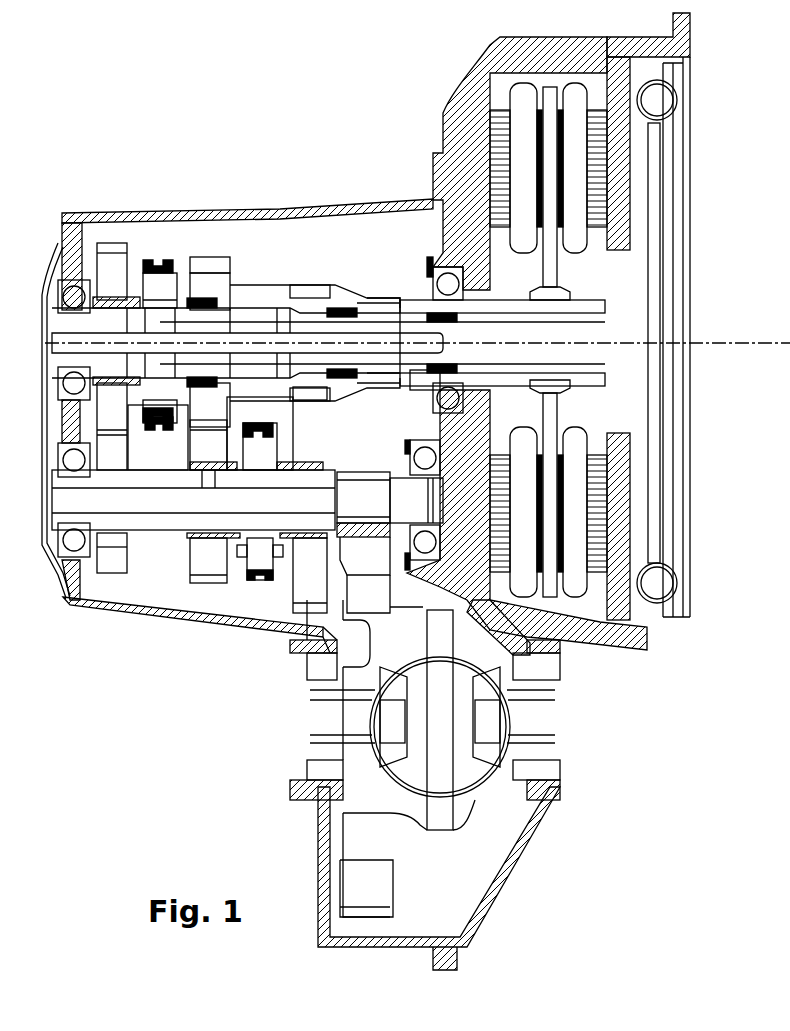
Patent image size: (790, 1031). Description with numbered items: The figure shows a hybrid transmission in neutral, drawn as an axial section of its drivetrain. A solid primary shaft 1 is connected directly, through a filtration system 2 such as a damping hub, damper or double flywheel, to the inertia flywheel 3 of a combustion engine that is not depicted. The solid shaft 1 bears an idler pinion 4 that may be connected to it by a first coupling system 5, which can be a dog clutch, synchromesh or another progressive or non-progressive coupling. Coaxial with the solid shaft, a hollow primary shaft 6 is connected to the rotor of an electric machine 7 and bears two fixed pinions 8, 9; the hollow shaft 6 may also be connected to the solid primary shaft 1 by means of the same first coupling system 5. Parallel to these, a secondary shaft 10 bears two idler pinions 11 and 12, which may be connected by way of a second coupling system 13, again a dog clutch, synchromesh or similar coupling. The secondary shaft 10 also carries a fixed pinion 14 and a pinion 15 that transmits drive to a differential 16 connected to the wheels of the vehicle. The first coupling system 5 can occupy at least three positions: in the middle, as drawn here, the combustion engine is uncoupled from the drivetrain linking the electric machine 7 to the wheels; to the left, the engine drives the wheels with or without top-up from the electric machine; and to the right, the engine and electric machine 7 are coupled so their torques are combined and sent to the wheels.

The solid primary shaft 1 is at (617, 353).
The filtration system 2 is at (655, 196).
The inertia flywheel 3 is at (677, 177).
The idler pinion 4 is at (112, 260).
The first coupling system 5 is at (163, 263).
The hollow primary shaft 6 is at (390, 300).
The electric machine 7 is at (547, 256).
The fixed pinion 8 is at (310, 290).
The fixed pinion 9 is at (203, 262).
The secondary shaft 10 is at (167, 517).
The idler pinion 11 is at (203, 580).
The idler pinion 12 is at (297, 587).
The second coupling system 13 is at (267, 577).
The fixed pinion 14 is at (113, 557).
The pinion 15 is at (353, 500).
The differential 16 is at (368, 550).